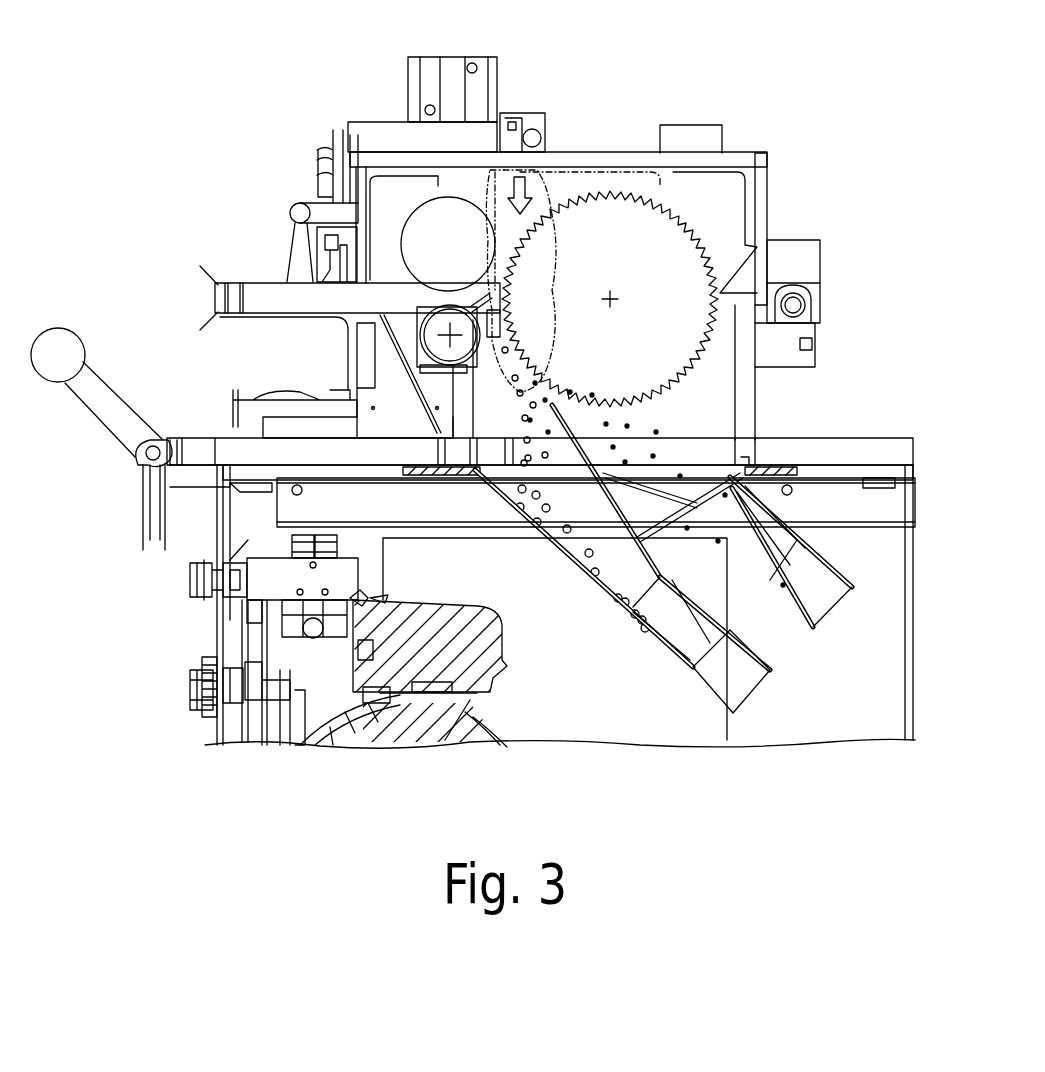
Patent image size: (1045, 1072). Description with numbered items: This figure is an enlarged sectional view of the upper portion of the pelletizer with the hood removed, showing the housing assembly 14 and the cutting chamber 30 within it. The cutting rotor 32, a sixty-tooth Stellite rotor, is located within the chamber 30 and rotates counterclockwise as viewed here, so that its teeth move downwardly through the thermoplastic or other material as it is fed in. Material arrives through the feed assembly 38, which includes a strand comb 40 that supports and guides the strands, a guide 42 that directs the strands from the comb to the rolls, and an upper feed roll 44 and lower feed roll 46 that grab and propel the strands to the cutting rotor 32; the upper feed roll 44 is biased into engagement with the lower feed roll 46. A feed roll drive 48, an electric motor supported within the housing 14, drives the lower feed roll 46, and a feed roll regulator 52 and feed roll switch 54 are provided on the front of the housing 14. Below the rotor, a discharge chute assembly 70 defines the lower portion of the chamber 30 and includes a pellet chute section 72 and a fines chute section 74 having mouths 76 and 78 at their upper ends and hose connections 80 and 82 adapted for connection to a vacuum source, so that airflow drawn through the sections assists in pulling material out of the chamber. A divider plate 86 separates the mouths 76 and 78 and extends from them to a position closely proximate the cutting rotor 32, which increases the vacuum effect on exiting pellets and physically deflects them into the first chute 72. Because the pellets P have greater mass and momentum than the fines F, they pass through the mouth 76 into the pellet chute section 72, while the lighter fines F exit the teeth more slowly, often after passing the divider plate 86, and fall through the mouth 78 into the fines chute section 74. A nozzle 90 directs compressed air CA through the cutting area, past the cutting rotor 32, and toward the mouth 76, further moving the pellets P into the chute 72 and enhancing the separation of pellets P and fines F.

The housing assembly 14 is at (912, 608).
The chamber 30 is at (722, 204).
The cutting rotor 32 is at (700, 378).
The feed assembly 38 is at (236, 206).
The strand comb 40 is at (55, 328).
The guide 42 is at (252, 282).
The upper feed roll 44 is at (441, 218).
The lower feed roll 46 is at (448, 336).
The feed roll drive 48 is at (425, 720).
The feed roll regulator 52 is at (190, 694).
The feed roll switch 54 is at (190, 580).
The discharge chute assembly 70 is at (633, 652).
The pellet chute section 72 is at (568, 548).
The fines chute section 74 is at (793, 542).
The mouth 76 is at (565, 478).
The mouth 78 is at (717, 468).
The hose connection 80 is at (735, 683).
The hose connection 82 is at (825, 593).
The divider plate 86 is at (566, 418).
The nozzle 90 is at (545, 131).
The compressed air CA is at (533, 194).
The fines F is at (686, 440).
The pellets P is at (520, 490).